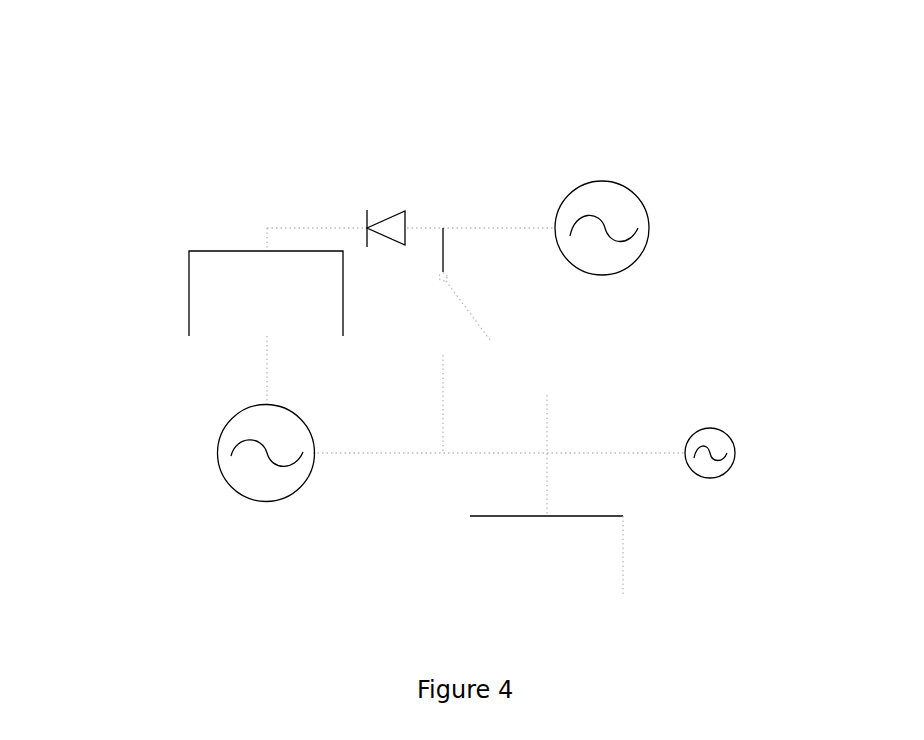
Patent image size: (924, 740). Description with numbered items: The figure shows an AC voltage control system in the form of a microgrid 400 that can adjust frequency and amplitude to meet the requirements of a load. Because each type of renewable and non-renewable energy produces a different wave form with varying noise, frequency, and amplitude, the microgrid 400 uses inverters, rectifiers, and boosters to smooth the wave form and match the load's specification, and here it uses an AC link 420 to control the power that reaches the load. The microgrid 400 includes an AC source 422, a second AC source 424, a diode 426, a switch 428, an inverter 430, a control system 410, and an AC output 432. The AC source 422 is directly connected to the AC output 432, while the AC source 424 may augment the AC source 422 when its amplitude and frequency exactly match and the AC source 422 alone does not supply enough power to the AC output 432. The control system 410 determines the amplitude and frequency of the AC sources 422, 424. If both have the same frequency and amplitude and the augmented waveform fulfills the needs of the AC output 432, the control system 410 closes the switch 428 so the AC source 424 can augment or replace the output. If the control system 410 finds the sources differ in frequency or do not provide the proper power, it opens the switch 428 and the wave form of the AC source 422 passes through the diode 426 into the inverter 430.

The microgrid 400 is at (815, 67).
The control system 410 is at (633, 560).
The AC link 420 is at (457, 217).
The AC source 422 is at (197, 455).
The AC source 424 is at (643, 182).
The diode 426 is at (377, 195).
The switch 428 is at (477, 300).
The inverter 430 is at (180, 263).
The AC output 432 is at (722, 423).